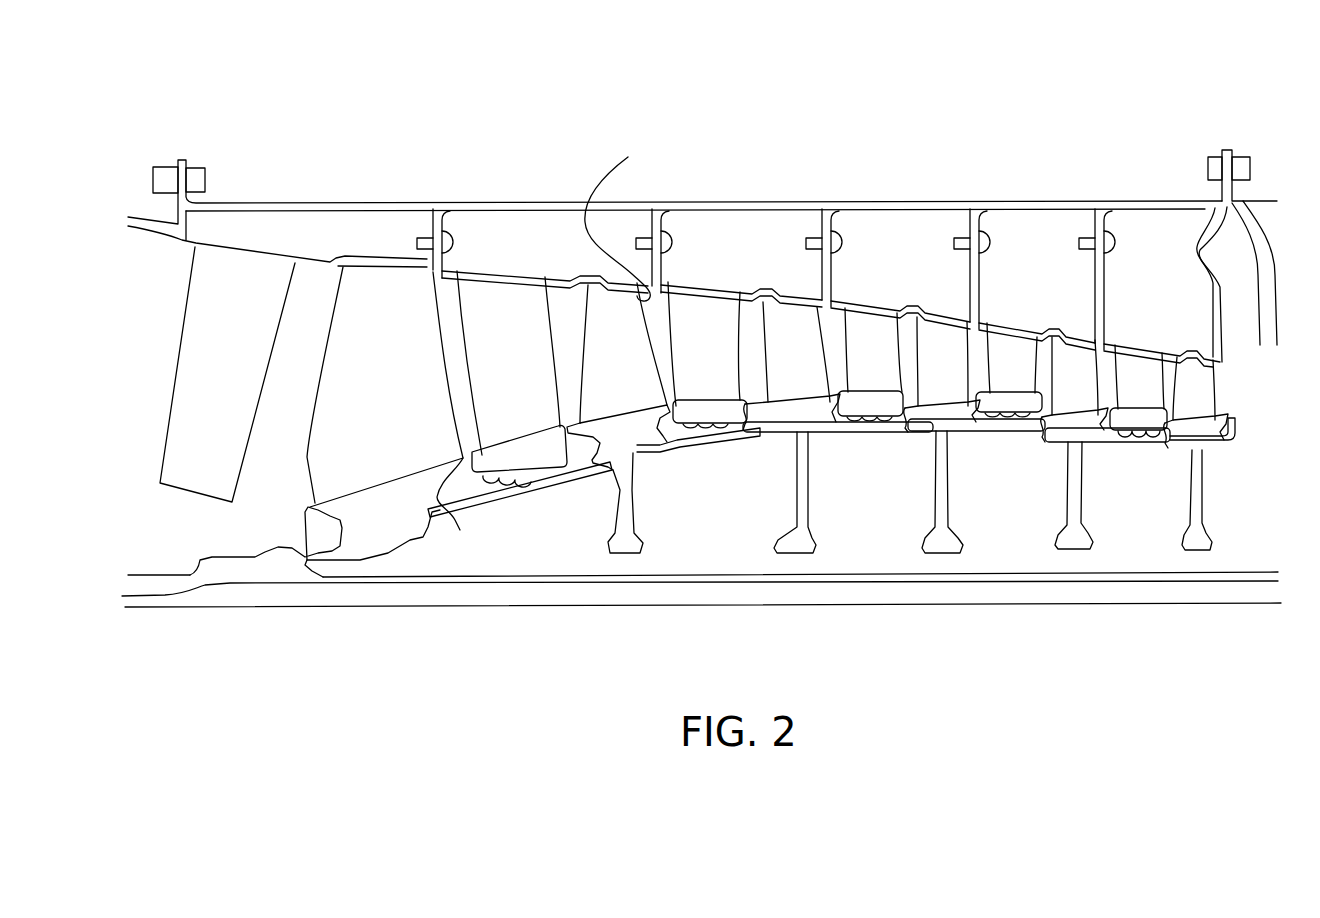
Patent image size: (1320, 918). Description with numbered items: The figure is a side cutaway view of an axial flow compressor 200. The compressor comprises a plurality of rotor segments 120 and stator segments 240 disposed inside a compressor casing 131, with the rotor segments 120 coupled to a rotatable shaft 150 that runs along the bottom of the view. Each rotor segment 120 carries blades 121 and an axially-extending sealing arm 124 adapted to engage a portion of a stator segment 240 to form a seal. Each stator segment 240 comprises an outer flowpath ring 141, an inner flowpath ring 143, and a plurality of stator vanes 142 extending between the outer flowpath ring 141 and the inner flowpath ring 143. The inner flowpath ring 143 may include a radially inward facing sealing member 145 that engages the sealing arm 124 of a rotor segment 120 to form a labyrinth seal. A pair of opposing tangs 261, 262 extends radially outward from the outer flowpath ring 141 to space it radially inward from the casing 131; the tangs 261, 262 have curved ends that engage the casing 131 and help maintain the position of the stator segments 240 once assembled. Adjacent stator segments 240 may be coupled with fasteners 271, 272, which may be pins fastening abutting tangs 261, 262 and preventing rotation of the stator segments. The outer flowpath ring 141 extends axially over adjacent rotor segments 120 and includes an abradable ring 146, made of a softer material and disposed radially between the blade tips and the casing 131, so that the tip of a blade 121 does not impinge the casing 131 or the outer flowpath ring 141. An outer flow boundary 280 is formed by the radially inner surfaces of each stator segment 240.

The axial flow compressor 200 is at (285, 108).
The rotor segment 120 is at (638, 465).
The blade 121 is at (395, 376).
The sealing arm 124 is at (457, 517).
The compressor casing 131 is at (1143, 199).
The outer flowpath ring 141 is at (520, 268).
The stator vane 142 is at (526, 367).
The inner flowpath ring 143 is at (545, 467).
The sealing member 145 is at (727, 432).
The abradable ring 146 is at (602, 277).
The rotatable shaft 150 is at (990, 595).
The stator segment 240 is at (557, 192).
The tang 261 is at (448, 222).
The tang 262 is at (642, 222).
The fastener 271 is at (665, 252).
The fastener 272 is at (452, 250).
The outer flow boundary 280 is at (626, 217).